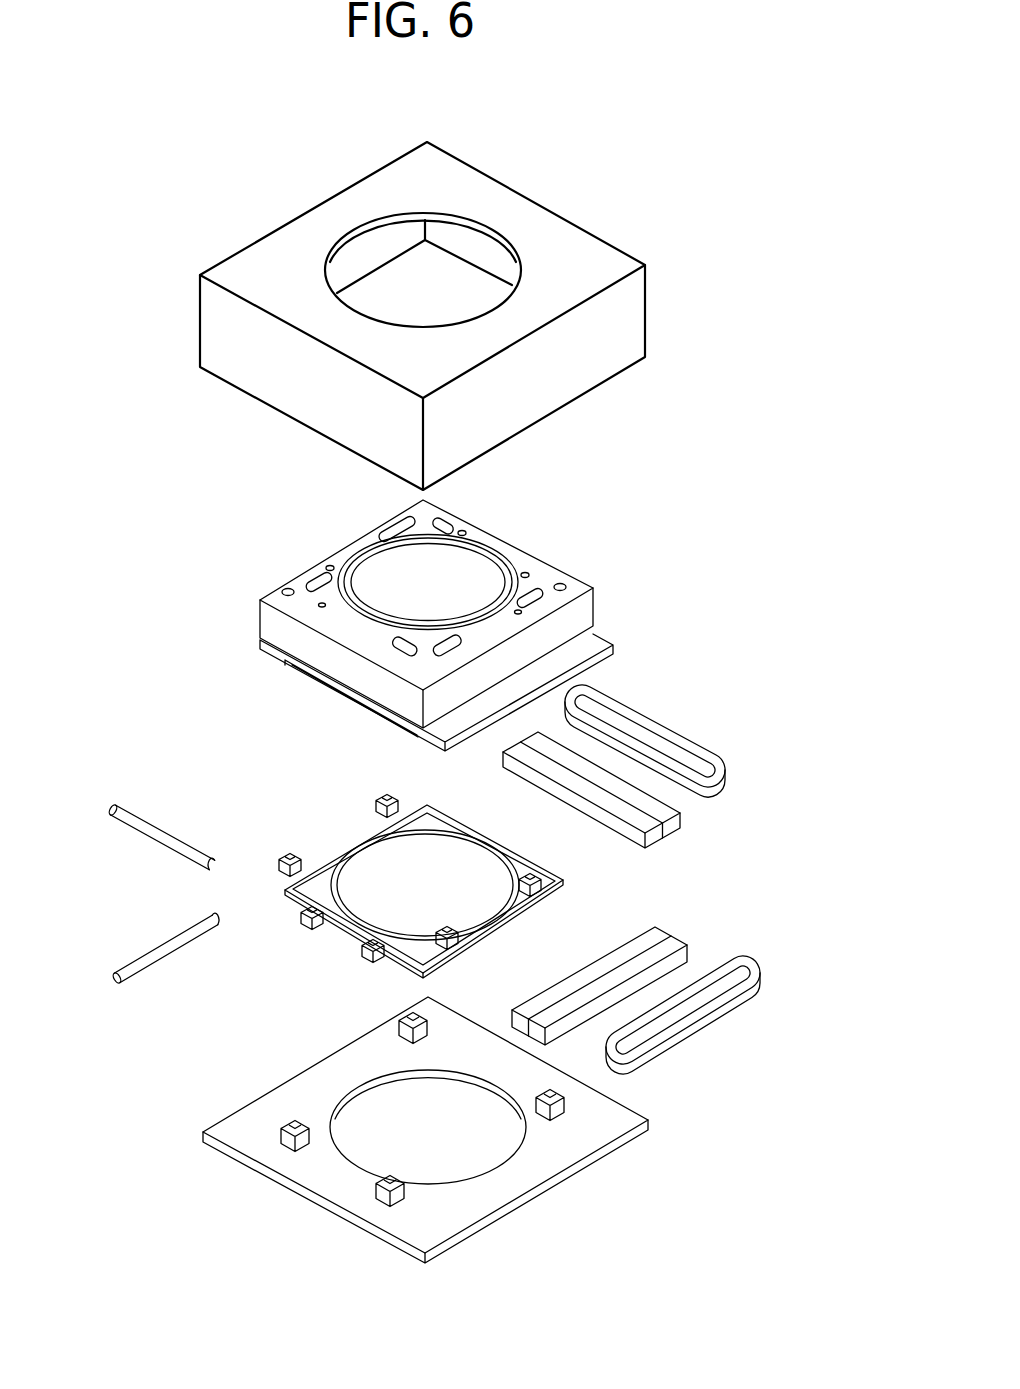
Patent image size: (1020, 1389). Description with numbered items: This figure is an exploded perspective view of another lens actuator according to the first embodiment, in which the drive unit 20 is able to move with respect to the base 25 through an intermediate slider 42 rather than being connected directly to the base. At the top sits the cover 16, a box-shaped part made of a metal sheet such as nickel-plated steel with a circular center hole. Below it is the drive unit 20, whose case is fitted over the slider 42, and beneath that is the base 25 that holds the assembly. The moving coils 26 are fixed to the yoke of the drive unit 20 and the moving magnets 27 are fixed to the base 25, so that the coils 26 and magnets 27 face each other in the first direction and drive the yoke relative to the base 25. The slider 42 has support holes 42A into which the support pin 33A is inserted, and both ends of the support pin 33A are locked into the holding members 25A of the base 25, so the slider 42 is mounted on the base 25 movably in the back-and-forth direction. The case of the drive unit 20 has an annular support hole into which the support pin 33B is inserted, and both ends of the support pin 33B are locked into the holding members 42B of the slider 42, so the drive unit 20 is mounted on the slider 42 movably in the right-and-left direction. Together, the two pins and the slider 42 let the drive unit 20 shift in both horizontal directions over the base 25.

The cover 16 is at (645, 297).
The drive unit 20 is at (537, 553).
The base 25 is at (425, 1153).
The holding members 25A is at (382, 1198).
The moving coils 26 is at (660, 723).
The moving magnets 27 is at (682, 817).
The support pin 33A is at (158, 823).
The support pin 33B is at (138, 953).
The slider 42 is at (500, 884).
The support holes 42A is at (370, 965).
The holding members 42B is at (380, 799).